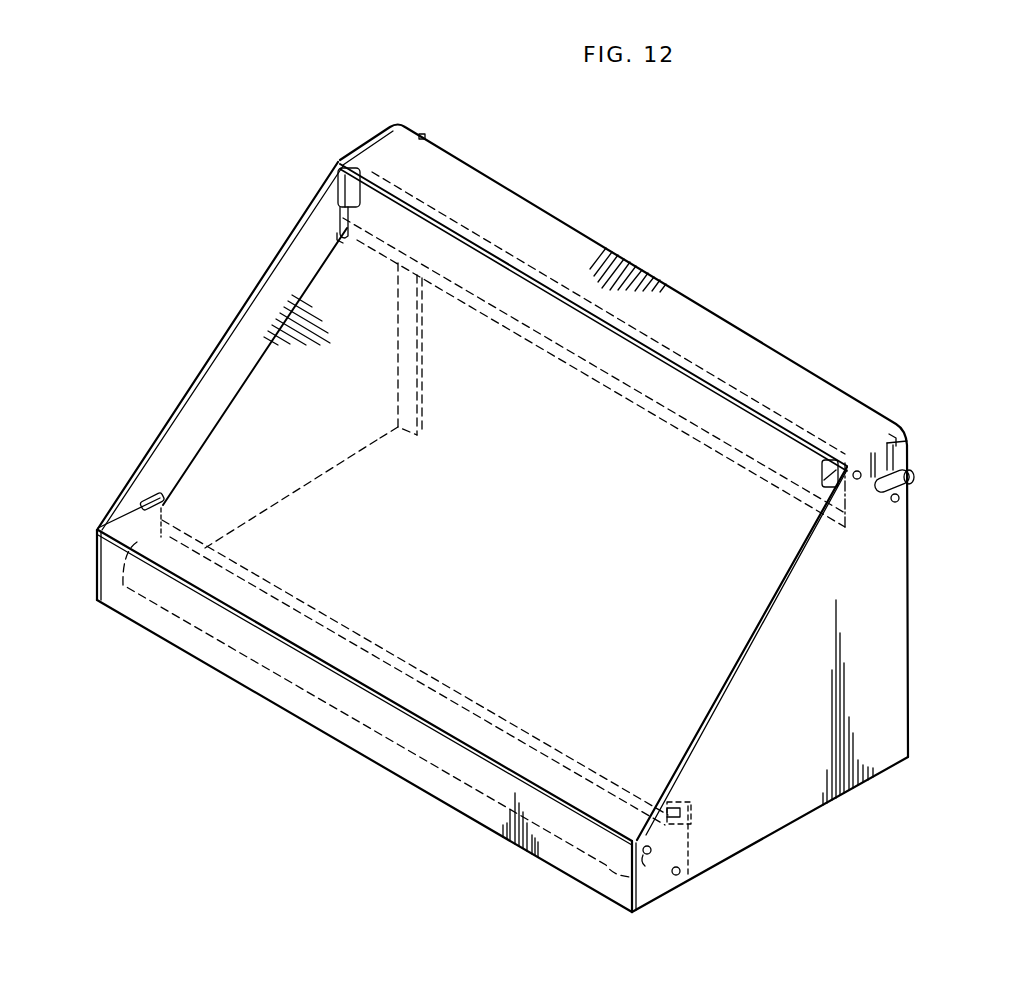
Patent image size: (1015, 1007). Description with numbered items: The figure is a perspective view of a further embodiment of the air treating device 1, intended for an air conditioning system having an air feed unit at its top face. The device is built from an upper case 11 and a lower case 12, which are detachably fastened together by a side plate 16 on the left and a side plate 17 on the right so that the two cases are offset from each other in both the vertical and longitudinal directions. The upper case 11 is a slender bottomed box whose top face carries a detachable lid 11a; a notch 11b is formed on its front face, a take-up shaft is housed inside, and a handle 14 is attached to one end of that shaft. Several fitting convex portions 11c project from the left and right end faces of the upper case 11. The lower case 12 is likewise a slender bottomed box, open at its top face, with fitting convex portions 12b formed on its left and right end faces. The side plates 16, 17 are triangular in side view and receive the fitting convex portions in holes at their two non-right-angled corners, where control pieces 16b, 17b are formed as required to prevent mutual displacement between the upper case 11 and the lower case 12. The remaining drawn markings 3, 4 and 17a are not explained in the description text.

The air treating device 1 is at (690, 225).
The lid panel 3 is at (253, 412).
The top cover surface 4 is at (557, 218).
The upper case 11 is at (765, 343).
The detachable lid 11a is at (813, 402).
The notch 11b is at (347, 213).
The fitting convex portions 11c is at (893, 437).
The lower case 12 is at (420, 788).
The fitting convex portions 12b is at (651, 855).
The handle 14 is at (907, 463).
The side plate 16 is at (212, 348).
The control pieces 16b is at (345, 187).
The side plate 17 is at (812, 777).
The side wall holes 17a is at (861, 479).
The control pieces 17b is at (828, 462).